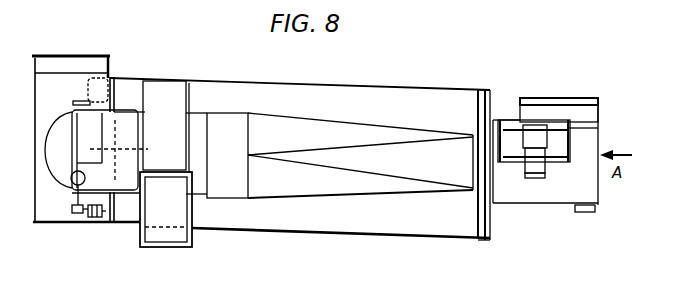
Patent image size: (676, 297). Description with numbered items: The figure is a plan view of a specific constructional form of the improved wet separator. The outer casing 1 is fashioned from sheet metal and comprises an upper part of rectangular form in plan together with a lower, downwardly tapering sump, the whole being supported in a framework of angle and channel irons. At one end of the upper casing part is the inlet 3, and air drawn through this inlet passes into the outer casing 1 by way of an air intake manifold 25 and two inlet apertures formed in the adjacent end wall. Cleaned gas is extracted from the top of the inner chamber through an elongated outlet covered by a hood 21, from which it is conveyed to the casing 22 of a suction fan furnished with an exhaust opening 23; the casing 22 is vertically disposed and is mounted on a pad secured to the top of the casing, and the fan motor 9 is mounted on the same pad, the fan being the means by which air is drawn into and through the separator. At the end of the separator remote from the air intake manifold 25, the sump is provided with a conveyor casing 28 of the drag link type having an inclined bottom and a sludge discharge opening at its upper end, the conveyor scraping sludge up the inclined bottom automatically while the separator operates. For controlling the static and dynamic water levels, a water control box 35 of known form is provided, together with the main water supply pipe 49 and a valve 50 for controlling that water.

The outer casing 1 is at (282, 232).
The inlet 3 is at (87, 70).
The fan motor 9 is at (112, 138).
The hood 21 is at (298, 130).
The casing of suction fan 22 is at (170, 88).
The exhaust opening 23 is at (163, 232).
The air intake manifold 25 is at (43, 218).
The conveyor casing 28 is at (517, 193).
The water control box 35 is at (130, 151).
The main water supply pipe 49 is at (92, 220).
The valve 50 is at (85, 180).